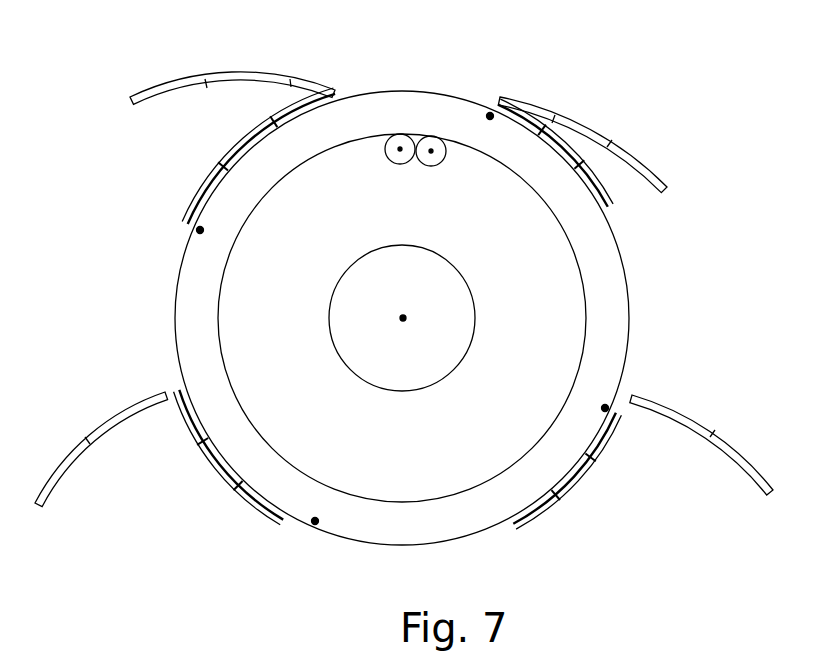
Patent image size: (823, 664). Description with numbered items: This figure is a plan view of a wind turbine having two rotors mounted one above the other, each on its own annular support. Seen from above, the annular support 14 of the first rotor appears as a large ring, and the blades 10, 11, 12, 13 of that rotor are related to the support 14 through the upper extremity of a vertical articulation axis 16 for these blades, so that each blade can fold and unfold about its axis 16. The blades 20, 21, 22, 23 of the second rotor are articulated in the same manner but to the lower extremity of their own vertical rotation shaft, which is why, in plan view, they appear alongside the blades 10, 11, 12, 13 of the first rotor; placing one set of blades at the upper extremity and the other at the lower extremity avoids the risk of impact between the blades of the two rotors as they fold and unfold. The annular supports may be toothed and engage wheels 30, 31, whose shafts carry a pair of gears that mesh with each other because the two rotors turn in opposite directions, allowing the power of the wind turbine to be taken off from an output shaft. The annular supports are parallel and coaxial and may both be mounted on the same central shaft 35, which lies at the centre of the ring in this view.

The blade 10 is at (693, 421).
The blade 11 is at (620, 147).
The blade 12 is at (220, 163).
The blade 13 is at (235, 495).
The annular support 14 is at (612, 290).
The vertical articulation axis 16 is at (198, 229).
The blade 20 is at (603, 447).
The blade 21 is at (607, 184).
The blade 22 is at (240, 76).
The blade 23 is at (113, 422).
The wheel 30 is at (434, 160).
The wheel 31 is at (398, 153).
The central shaft 35 is at (403, 320).